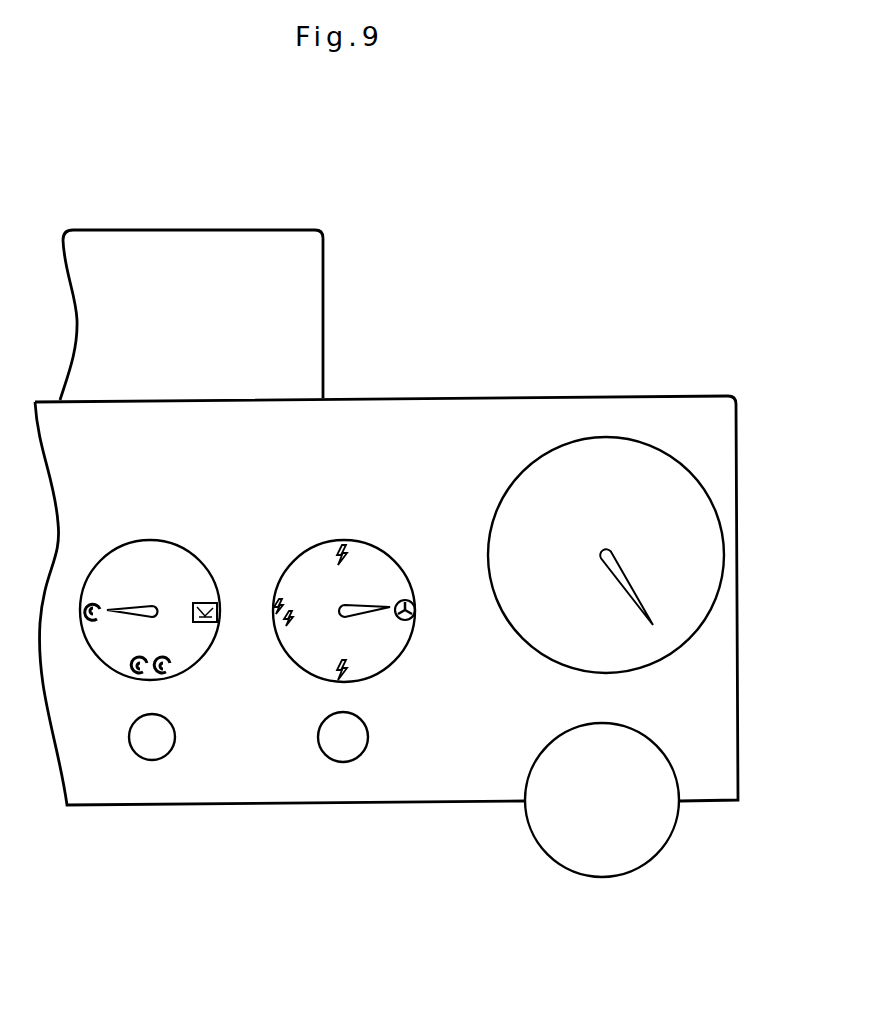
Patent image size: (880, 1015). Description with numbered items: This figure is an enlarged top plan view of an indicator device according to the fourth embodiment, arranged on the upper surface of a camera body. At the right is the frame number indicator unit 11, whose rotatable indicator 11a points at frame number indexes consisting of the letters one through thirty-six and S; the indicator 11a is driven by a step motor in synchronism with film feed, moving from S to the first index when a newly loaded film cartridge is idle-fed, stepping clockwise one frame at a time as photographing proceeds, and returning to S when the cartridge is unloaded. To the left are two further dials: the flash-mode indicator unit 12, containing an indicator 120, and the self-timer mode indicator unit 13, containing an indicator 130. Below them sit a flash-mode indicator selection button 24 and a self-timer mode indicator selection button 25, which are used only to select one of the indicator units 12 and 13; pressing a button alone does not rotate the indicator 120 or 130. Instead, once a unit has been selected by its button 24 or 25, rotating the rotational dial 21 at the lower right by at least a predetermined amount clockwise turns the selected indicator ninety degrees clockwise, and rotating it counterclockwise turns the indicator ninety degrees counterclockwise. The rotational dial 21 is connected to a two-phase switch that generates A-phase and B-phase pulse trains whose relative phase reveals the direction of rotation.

The frame number indicator unit 11 is at (521, 475).
The indicator 11a is at (668, 477).
The flash-mode indicator unit 12 is at (372, 681).
The indicator 120 is at (350, 617).
The self-timer mode indicator unit 13 is at (203, 664).
The indicator 130 is at (147, 617).
The rotational dial 21 is at (548, 862).
The flash-mode indicator selection button 24 is at (330, 742).
The self-timer mode indicator selection button 25 is at (160, 737).